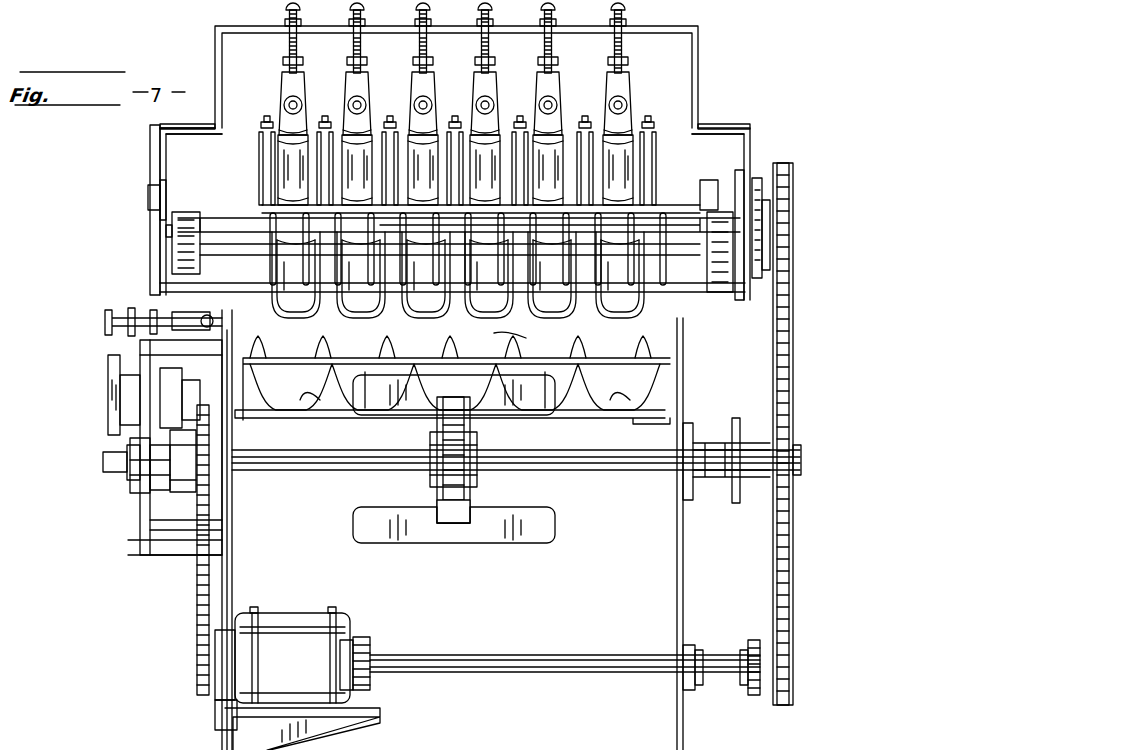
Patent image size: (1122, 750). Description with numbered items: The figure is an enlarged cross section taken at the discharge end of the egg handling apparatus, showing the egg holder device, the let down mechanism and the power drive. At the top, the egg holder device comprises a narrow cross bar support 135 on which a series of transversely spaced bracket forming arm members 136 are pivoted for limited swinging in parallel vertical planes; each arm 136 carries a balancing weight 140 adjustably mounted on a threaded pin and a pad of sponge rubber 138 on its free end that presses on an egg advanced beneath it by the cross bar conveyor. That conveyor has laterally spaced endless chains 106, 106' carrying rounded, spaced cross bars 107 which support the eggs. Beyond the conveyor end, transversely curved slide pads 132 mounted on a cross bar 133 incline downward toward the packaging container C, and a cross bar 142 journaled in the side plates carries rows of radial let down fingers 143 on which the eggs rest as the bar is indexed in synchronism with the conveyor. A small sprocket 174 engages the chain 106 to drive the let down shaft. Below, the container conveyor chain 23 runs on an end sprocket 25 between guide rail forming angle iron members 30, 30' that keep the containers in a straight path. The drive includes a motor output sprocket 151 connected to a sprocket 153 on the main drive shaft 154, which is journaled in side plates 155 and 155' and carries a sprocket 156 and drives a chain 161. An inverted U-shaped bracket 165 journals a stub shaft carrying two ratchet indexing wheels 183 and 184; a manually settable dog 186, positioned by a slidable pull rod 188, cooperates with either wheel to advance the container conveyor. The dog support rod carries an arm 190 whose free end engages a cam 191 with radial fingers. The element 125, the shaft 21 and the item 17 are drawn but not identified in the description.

The cross bar support 135 is at (699, 42).
The bracket forming arm member 136 is at (370, 118).
The balancing weight 140 is at (348, 105).
The sponge rubber pad 138 is at (290, 160).
The guide rod 125 is at (265, 155).
The let down finger cross bar 142 is at (182, 208).
The cross bar 107 is at (206, 215).
The let down finger 143 is at (280, 182).
The chute forming slide pad 132 is at (296, 300).
The container C is at (521, 339).
The endless chain 106' is at (144, 245).
The endless chain 106 is at (686, 269).
The cross bar 133 is at (706, 295).
The small sprocket 174 is at (720, 180).
The output sprocket 151 is at (793, 190).
The guide rail forming angle iron member 30 is at (452, 402).
The guide rail forming angle iron member 30' is at (450, 391).
The main shaft 21 is at (562, 465).
The endless chain 23 is at (475, 432).
The end sprocket 25 is at (474, 463).
The side plate 155 is at (702, 534).
The side plate 155' is at (258, 530).
The chain 161 is at (198, 580).
The pull rod 188 is at (118, 315).
The inverted U-shaped bracket 165 is at (212, 352).
The manually settable dog 186 is at (170, 372).
The arm 190 is at (112, 416).
The cam 191 is at (103, 470).
The ratchet indexing wheel 184 is at (138, 496).
The ratchet indexing wheel 183 is at (178, 474).
The sprocket 153 is at (370, 648).
The main drive shaft 154 is at (525, 665).
The sprocket 156 is at (785, 668).
The base 17 is at (318, 725).